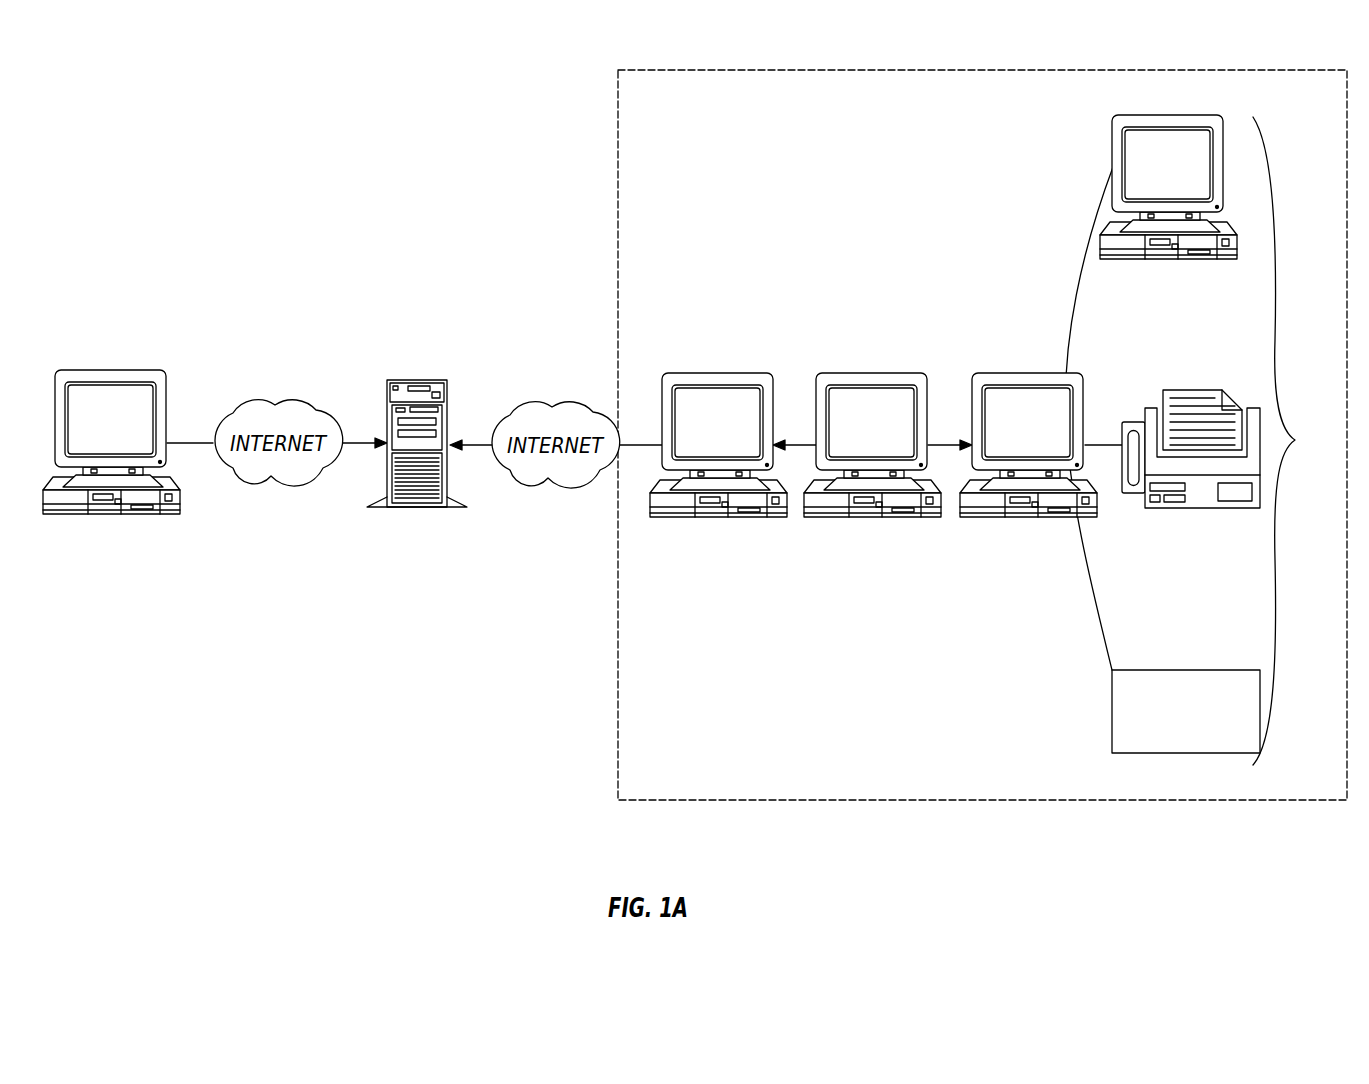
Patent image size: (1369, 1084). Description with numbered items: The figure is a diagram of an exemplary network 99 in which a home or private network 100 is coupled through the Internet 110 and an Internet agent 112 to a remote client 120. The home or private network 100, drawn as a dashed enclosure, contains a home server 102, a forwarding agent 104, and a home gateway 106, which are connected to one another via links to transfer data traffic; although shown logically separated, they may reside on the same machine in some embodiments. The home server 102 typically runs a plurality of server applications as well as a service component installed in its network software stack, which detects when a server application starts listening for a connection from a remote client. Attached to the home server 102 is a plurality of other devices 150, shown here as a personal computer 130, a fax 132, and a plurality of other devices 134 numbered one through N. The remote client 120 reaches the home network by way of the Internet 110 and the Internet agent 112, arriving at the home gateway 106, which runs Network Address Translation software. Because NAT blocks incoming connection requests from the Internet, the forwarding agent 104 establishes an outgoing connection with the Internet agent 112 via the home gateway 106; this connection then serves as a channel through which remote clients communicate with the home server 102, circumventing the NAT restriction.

The exemplary network 99 is at (606, 490).
The home or private network 100 is at (1018, 800).
The home server 102 is at (990, 373).
The forwarding agent 104 is at (848, 373).
The home gateway 106 is at (705, 373).
The Internet 110 is at (293, 403).
The Internet agent 112 is at (405, 380).
The remote client 120 is at (107, 368).
The personal computer 130 is at (1127, 115).
The fax 132 is at (1178, 390).
The other devices 134 is at (1112, 733).
The plurality of other devices 150 is at (1202, 441).